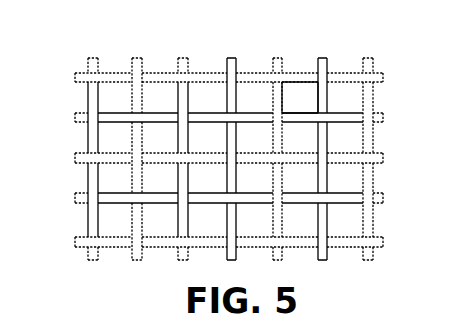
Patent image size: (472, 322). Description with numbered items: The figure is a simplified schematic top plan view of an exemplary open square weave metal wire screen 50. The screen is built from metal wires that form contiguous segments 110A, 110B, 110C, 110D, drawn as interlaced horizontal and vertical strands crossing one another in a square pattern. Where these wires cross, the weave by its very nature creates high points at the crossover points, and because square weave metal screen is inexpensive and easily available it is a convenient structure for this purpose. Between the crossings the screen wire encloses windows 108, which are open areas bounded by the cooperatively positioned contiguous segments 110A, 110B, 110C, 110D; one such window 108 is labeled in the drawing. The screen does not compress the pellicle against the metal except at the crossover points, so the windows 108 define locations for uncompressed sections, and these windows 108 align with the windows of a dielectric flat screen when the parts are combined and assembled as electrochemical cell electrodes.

The open square weave metal wire screen 50 is at (207, 72).
The window 108 is at (317, 104).
The contiguous segment 110A is at (88, 96).
The contiguous segment 110B is at (118, 120).
The contiguous segment 110C is at (110, 72).
The contiguous segment 110D is at (138, 97).